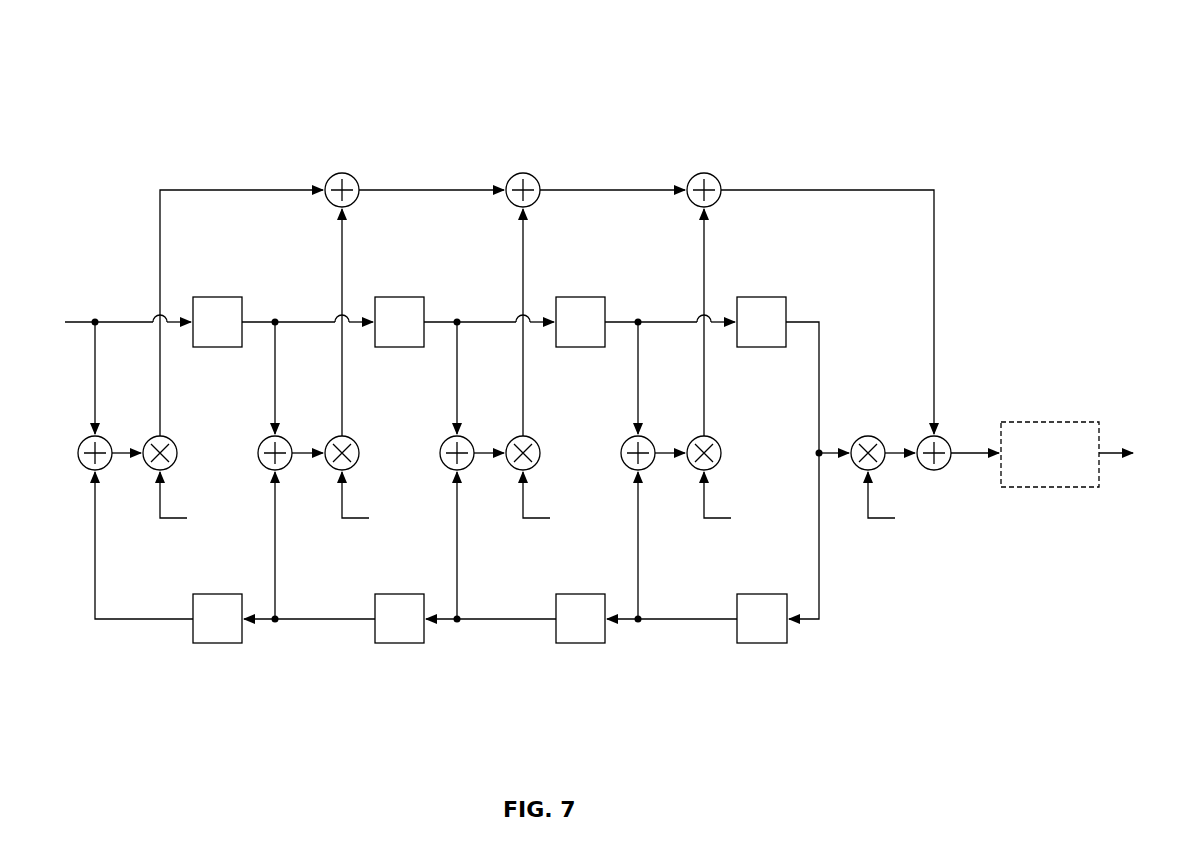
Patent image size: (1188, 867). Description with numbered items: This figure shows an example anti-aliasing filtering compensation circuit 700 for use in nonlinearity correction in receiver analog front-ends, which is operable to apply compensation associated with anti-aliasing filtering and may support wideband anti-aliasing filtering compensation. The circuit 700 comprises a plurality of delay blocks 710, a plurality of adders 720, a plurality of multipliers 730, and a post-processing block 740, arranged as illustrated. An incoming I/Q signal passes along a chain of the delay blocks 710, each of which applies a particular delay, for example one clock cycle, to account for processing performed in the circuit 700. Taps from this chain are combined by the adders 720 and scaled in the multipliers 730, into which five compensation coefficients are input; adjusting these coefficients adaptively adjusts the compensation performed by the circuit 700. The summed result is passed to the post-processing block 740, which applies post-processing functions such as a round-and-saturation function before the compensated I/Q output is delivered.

The anti-aliasing filtering (AAF) compensation circuit 700 is at (166, 89).
The delay block 710 is at (218, 297).
The adder 720 is at (353, 177).
The multiplier 730 is at (171, 440).
The post-processing block 740 is at (1047, 487).